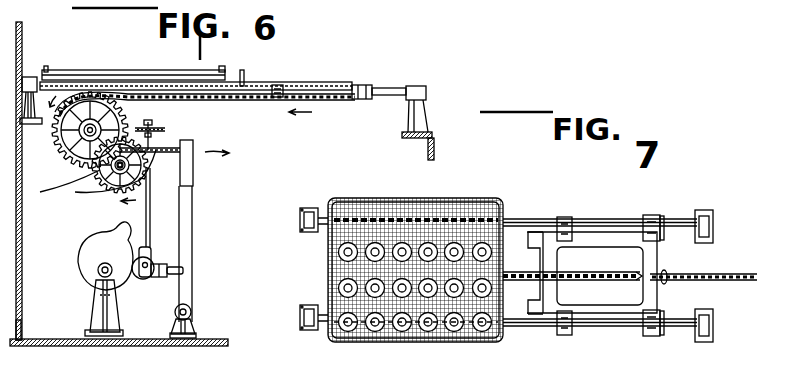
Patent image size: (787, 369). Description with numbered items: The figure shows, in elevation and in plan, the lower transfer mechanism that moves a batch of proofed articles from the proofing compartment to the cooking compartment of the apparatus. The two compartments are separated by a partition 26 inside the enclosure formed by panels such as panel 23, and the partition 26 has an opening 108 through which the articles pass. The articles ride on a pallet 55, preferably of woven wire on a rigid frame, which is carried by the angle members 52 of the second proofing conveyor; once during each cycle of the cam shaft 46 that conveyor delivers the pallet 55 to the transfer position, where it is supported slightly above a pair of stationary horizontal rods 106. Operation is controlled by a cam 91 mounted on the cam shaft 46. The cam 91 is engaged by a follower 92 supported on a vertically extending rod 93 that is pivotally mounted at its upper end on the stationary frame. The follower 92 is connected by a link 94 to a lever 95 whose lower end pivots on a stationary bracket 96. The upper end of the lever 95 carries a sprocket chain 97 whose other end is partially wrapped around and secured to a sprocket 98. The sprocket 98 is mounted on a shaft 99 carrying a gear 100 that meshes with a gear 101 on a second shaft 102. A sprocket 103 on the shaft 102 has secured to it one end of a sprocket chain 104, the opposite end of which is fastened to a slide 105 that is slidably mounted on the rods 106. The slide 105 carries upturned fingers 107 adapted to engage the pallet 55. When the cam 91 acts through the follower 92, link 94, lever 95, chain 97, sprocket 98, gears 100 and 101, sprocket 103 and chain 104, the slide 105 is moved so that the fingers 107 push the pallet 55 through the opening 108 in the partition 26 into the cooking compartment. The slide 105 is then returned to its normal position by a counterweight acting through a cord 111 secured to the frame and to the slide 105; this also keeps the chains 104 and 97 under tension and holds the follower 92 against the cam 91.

In FIG. 7, the panel 23 is at (573, 5).
In FIG. 6, the partition 26 is at (16, 244).
In FIG. 6, the cam shaft 46 is at (100, 274).
In FIG. 6, the angle member 52 is at (230, 72).
In FIG. 6, the pallet 55 is at (130, 76).
In FIG. 7, the pallet 55 is at (352, 199).
In FIG. 6, the cam 91 is at (84, 250).
In FIG. 6, the follower 92 is at (143, 280).
In FIG. 6, the rod 93 is at (150, 242).
In FIG. 6, the link 94 is at (161, 279).
In FIG. 6, the lever 95 is at (192, 240).
In FIG. 6, the stationary bracket 96 is at (192, 317).
In FIG. 6, the sprocket chain 97 is at (168, 148).
In FIG. 6, the sprocket 98 is at (150, 170).
In FIG. 6, the shaft 99 is at (92, 194).
In FIG. 6, the gear 100 is at (44, 194).
In FIG. 6, the gear 101 is at (88, 161).
In FIG. 6, the shaft 102 is at (72, 136).
In FIG. 6, the sprocket 103 is at (108, 120).
In FIG. 6, the sprocket chain 104 is at (212, 104).
In FIG. 7, the sprocket chain 104 is at (585, 273).
In FIG. 6, the slide 105 is at (357, 84).
In FIG. 7, the slide 105 is at (578, 312).
In FIG. 6, the stationary horizontal rods 106 is at (396, 90).
In FIG. 7, the stationary horizontal rods 106 is at (600, 219).
In FIG. 6, the upturned fingers 107 is at (247, 76).
In FIG. 7, the upturned fingers 107 is at (538, 213).
In FIG. 6, the opening 108 is at (22, 66).
In FIG. 7, the cord 111 is at (708, 277).